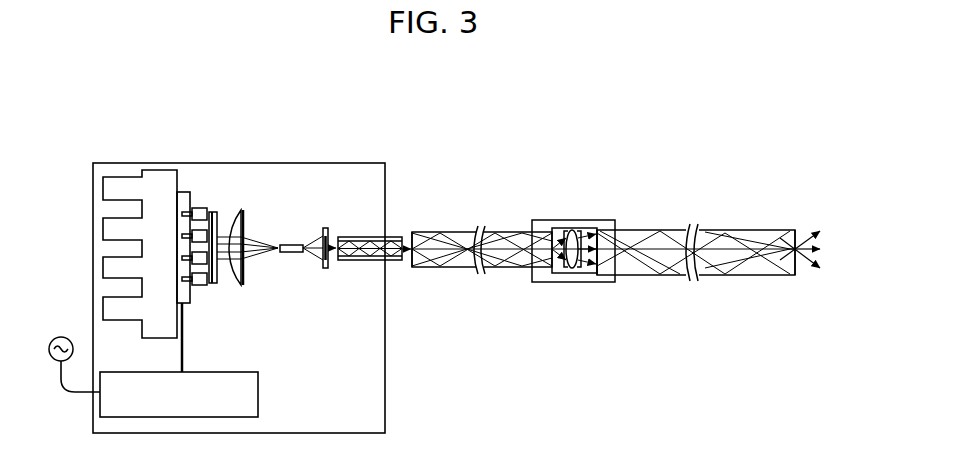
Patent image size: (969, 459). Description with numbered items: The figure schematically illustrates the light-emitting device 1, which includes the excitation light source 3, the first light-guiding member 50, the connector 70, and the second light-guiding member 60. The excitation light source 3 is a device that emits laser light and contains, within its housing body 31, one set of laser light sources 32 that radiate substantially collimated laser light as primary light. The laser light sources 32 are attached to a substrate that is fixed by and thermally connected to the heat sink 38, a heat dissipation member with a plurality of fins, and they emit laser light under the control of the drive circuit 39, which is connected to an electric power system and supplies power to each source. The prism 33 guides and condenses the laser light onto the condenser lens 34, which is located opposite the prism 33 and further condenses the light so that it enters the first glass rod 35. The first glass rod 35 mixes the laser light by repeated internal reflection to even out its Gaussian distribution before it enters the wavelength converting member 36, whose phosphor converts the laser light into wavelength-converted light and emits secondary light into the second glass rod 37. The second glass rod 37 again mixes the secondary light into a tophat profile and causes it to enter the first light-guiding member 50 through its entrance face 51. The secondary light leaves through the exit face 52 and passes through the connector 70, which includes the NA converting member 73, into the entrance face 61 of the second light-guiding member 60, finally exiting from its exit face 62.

The light-emitting device 1 is at (547, 116).
The excitation light source 3 is at (354, 163).
The housing body 31 is at (170, 163).
The laser light source 32 is at (201, 208).
The prism 33 is at (220, 219).
The condenser lens 34 is at (244, 217).
The first glass rod 35 is at (294, 243).
The wavelength converting member 36 is at (324, 270).
The second glass rod 37 is at (396, 236).
The heat sink 38 is at (152, 181).
The drive circuit 39 is at (258, 395).
The first light-guiding member 50 is at (449, 231).
The entrance face 51 is at (410, 264).
The exit face 52 is at (560, 272).
The second light-guiding member 60 is at (706, 229).
The entrance face 61 is at (594, 276).
The exit face 62 is at (795, 268).
The connector 70 is at (568, 219).
The NA converting member 73 is at (588, 229).